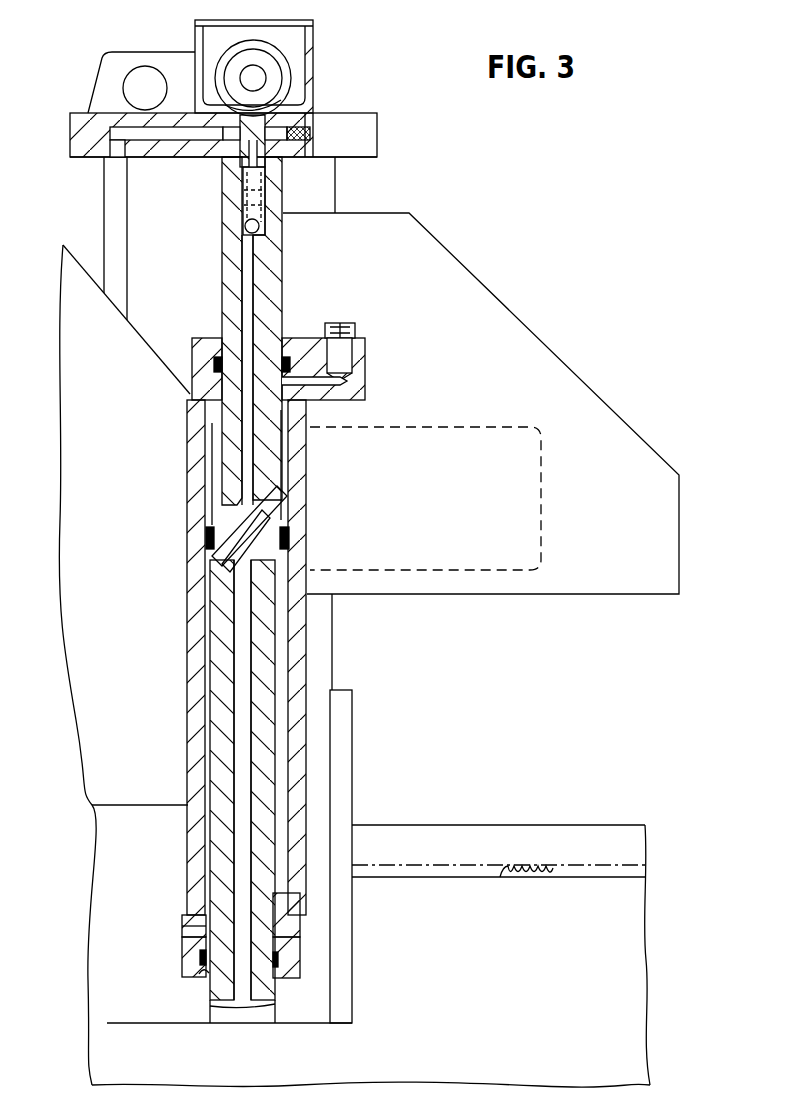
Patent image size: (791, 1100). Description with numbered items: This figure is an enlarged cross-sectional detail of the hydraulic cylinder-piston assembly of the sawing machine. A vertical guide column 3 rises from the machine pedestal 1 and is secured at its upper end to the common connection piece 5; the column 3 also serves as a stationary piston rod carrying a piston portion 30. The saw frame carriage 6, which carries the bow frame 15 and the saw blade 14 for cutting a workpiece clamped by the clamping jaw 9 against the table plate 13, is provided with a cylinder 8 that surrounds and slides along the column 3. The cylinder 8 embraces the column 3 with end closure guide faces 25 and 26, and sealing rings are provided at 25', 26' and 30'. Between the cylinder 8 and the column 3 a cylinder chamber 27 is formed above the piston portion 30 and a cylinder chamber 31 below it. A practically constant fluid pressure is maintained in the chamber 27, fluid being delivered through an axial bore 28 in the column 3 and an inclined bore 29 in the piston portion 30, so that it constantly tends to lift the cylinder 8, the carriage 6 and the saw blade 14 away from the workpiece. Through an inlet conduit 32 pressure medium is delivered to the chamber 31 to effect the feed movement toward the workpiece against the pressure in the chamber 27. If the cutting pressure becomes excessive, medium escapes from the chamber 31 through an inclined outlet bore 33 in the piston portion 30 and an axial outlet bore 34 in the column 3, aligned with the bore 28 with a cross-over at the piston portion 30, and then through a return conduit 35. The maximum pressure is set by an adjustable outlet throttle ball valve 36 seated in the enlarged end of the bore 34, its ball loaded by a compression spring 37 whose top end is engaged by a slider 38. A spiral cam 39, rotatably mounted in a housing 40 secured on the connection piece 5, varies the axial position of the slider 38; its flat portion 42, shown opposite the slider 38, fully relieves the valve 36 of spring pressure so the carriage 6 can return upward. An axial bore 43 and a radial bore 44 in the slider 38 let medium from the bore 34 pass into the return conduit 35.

The machine pedestal 1 is at (110, 1064).
The guide column 3 is at (232, 452).
The common connection piece 5 is at (360, 128).
The saw frame carriage 6 is at (108, 770).
The cylinder 8 is at (300, 465).
The clamping jaw 9 is at (623, 575).
The table plate 13 is at (545, 877).
The saw blade 14 is at (411, 843).
The bow frame 15 is at (525, 513).
The end closure guide face 25 is at (304, 361).
The sealing ring 25' is at (235, 336).
The end closure guide face 26 is at (169, 964).
The sealing ring 26' is at (190, 989).
The cylinder chamber 27 is at (290, 440).
The axial bore 28 is at (247, 655).
The inclined bore 29 is at (298, 520).
The piston portion 30 is at (163, 530).
The sealing ring 30' is at (218, 541).
The cylinder chamber 31 is at (283, 622).
The inlet conduit 32 is at (185, 935).
The inclined outlet bore 33 is at (210, 555).
The axial outlet bore 34 is at (255, 278).
The return conduit 35 is at (118, 245).
The adjustable outlet throttle ball valve 36 is at (262, 228).
The compression spring 37 is at (290, 193).
The slider 38 is at (285, 152).
The spiral cam 39 is at (236, 65).
The housing 40 is at (308, 48).
The flat portion 42 is at (287, 108).
The axial bore 43 is at (255, 152).
The radial bore 44 is at (310, 130).